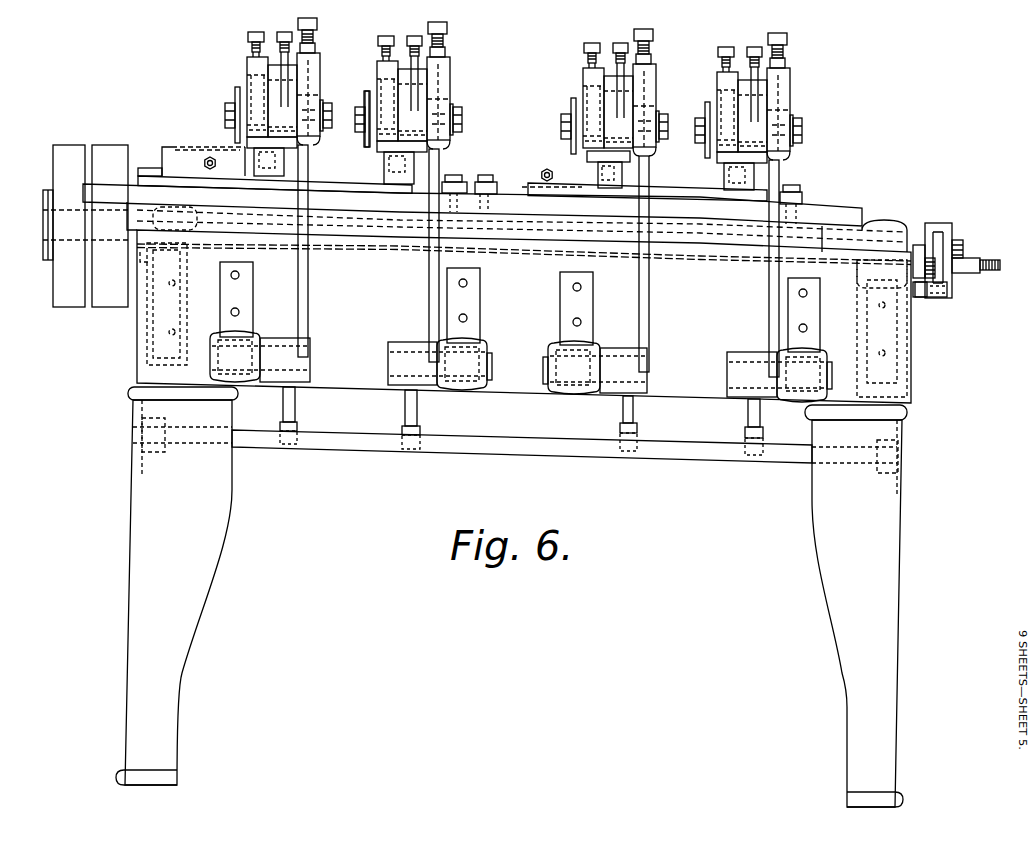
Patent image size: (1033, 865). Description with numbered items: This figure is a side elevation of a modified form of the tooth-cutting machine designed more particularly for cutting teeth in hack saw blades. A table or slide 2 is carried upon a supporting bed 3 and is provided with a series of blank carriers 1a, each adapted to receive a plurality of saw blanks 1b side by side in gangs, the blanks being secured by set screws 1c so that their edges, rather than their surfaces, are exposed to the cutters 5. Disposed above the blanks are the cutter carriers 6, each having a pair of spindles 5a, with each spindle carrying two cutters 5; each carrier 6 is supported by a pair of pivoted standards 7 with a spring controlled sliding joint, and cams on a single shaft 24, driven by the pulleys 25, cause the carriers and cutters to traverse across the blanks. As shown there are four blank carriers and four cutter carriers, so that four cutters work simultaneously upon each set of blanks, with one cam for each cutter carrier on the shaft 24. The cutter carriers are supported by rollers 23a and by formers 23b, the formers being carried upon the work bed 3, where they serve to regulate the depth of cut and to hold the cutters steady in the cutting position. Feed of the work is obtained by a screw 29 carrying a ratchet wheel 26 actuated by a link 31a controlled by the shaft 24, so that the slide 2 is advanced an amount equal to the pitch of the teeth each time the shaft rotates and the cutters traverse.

The blank carrier 1a is at (502, 170).
The saw blank 1b is at (520, 162).
The set screw 1c is at (547, 169).
The table or slide 2 is at (823, 217).
The supporting bed 3 is at (513, 504).
The cutter 5 is at (706, 102).
The spindle 5a is at (363, 100).
The cutter carrier 6 is at (718, 80).
The pivoted standard 7 is at (770, 333).
The roller 23a is at (732, 182).
The former 23b is at (693, 213).
The shaft 24 is at (523, 226).
The pulley 25 is at (60, 302).
The ratchet wheel 26 is at (935, 298).
The screw 29 is at (705, 258).
The link 31a is at (967, 242).